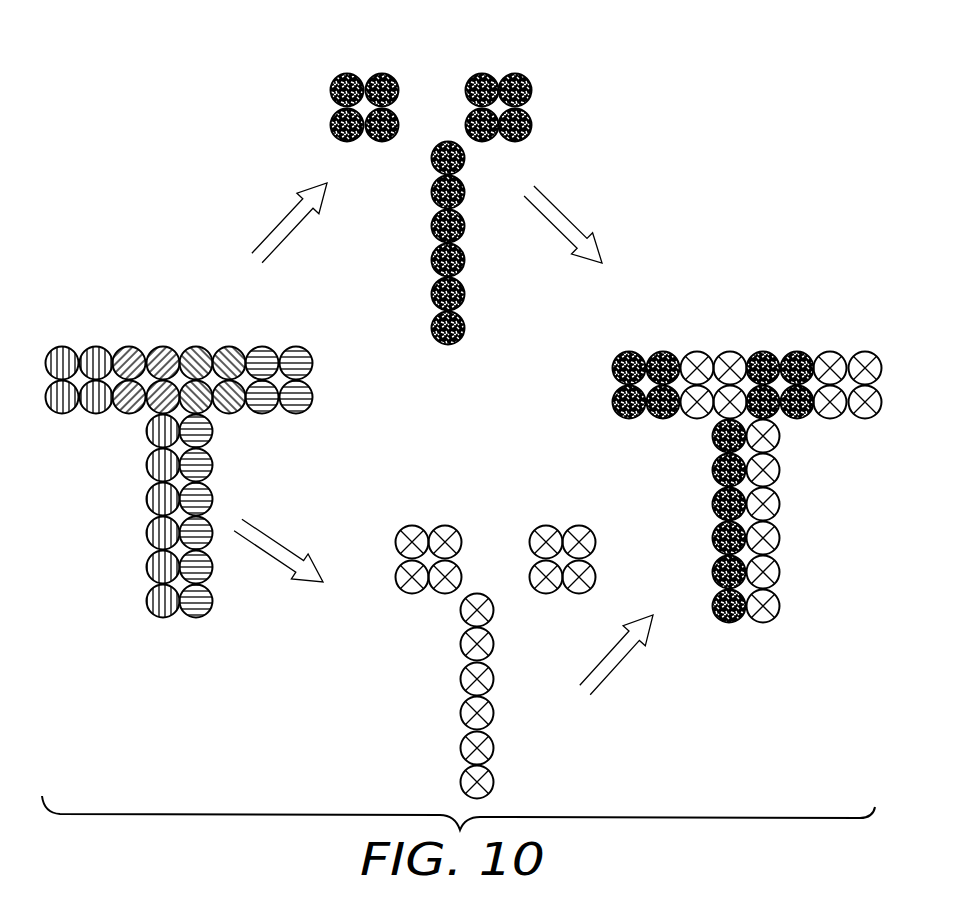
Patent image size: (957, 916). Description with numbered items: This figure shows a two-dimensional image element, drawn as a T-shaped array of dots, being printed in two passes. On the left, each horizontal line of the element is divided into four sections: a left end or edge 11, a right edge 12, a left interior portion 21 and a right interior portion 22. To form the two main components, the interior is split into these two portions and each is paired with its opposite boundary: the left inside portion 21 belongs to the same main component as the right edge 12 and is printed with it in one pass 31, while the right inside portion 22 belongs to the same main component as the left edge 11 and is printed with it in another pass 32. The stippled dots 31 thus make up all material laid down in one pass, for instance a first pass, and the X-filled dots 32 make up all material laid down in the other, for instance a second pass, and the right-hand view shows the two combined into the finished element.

The left edge 11 is at (68, 330).
The right edge 12 is at (278, 332).
The left interior portion 21 is at (125, 425).
The right interior portion 22 is at (233, 427).
The first pass 31 is at (440, 117).
The second pass 32 is at (492, 577).